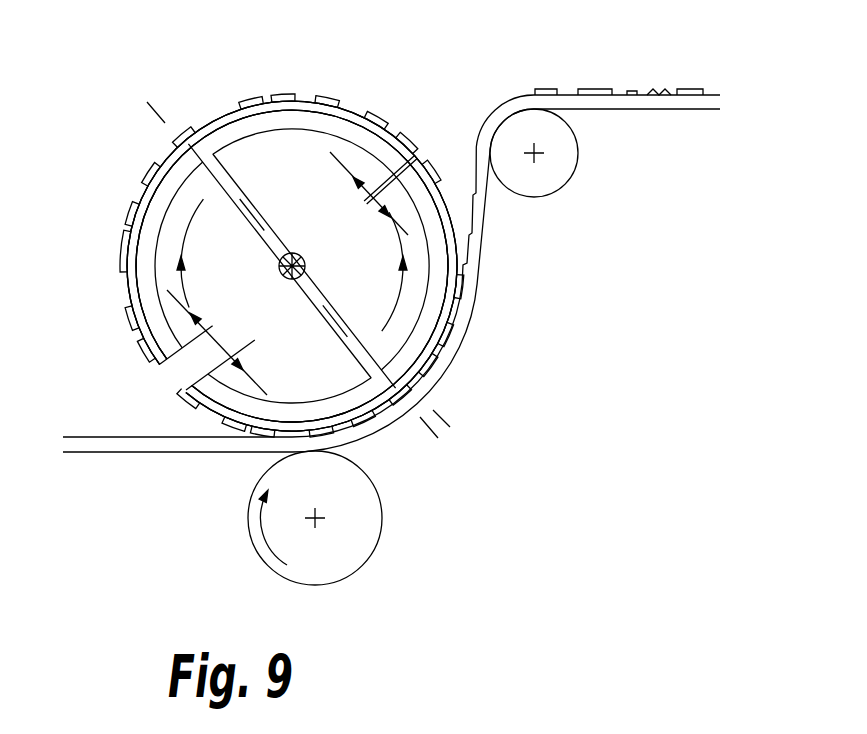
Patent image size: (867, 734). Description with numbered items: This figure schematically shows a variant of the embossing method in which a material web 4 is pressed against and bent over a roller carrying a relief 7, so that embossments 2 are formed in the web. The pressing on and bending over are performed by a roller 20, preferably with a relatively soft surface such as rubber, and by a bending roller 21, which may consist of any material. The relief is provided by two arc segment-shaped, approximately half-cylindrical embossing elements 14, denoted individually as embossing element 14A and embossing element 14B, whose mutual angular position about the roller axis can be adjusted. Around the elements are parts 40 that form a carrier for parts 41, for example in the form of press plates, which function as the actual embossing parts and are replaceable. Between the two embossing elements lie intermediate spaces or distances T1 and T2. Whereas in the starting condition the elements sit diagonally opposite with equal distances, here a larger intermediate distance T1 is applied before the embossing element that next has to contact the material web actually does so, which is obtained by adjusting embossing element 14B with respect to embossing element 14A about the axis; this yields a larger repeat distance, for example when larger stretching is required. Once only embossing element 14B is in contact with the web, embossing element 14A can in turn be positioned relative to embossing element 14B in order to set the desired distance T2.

The embossments 2 is at (640, 92).
The material web 4 is at (155, 442).
The relief 7 is at (312, 102).
The embossing elements 14 is at (152, 213).
The embossing element 14A is at (363, 402).
The embossing element 14B is at (145, 295).
The roller 20 is at (340, 562).
The bending roller 21 is at (556, 158).
The parts 40 is at (147, 320).
The parts 41 is at (153, 365).
The intermediate distance T1 is at (217, 336).
The intermediate distance T2 is at (364, 197).